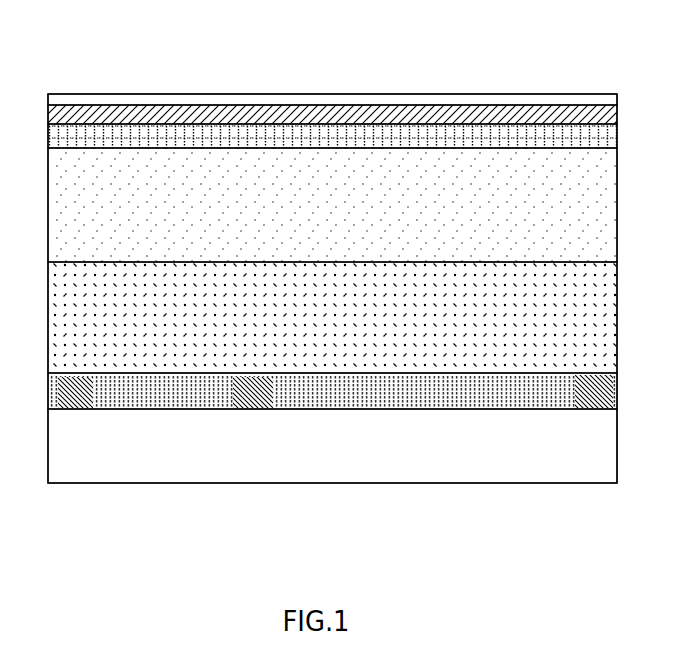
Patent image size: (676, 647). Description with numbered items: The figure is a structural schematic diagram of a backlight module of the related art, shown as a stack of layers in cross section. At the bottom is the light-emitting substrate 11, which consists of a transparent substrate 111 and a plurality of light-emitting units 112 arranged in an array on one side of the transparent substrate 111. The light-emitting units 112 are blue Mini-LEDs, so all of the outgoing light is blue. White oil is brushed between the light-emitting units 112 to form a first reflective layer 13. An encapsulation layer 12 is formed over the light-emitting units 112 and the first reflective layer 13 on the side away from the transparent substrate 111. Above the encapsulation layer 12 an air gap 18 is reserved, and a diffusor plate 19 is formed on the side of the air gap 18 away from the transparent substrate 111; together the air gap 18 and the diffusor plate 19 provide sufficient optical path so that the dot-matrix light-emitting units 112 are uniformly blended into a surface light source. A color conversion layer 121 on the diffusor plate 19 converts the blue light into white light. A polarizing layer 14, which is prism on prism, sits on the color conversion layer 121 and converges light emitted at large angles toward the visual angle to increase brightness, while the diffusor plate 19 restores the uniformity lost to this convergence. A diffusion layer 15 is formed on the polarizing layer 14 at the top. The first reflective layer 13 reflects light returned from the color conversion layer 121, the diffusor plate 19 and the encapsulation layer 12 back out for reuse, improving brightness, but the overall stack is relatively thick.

The light-emitting substrate 11 is at (332, 500).
The transparent substrate 111 is at (160, 445).
The light-emitting units 112 is at (83, 400).
The encapsulation layer 12 is at (332, 465).
The first reflective layer 13 is at (325, 407).
The polarizing layer 14 is at (216, 114).
The diffusion layer 15 is at (297, 103).
The air gap 18 is at (498, 353).
The diffusor plate 19 is at (403, 178).
The color conversion layer 121 is at (153, 126).